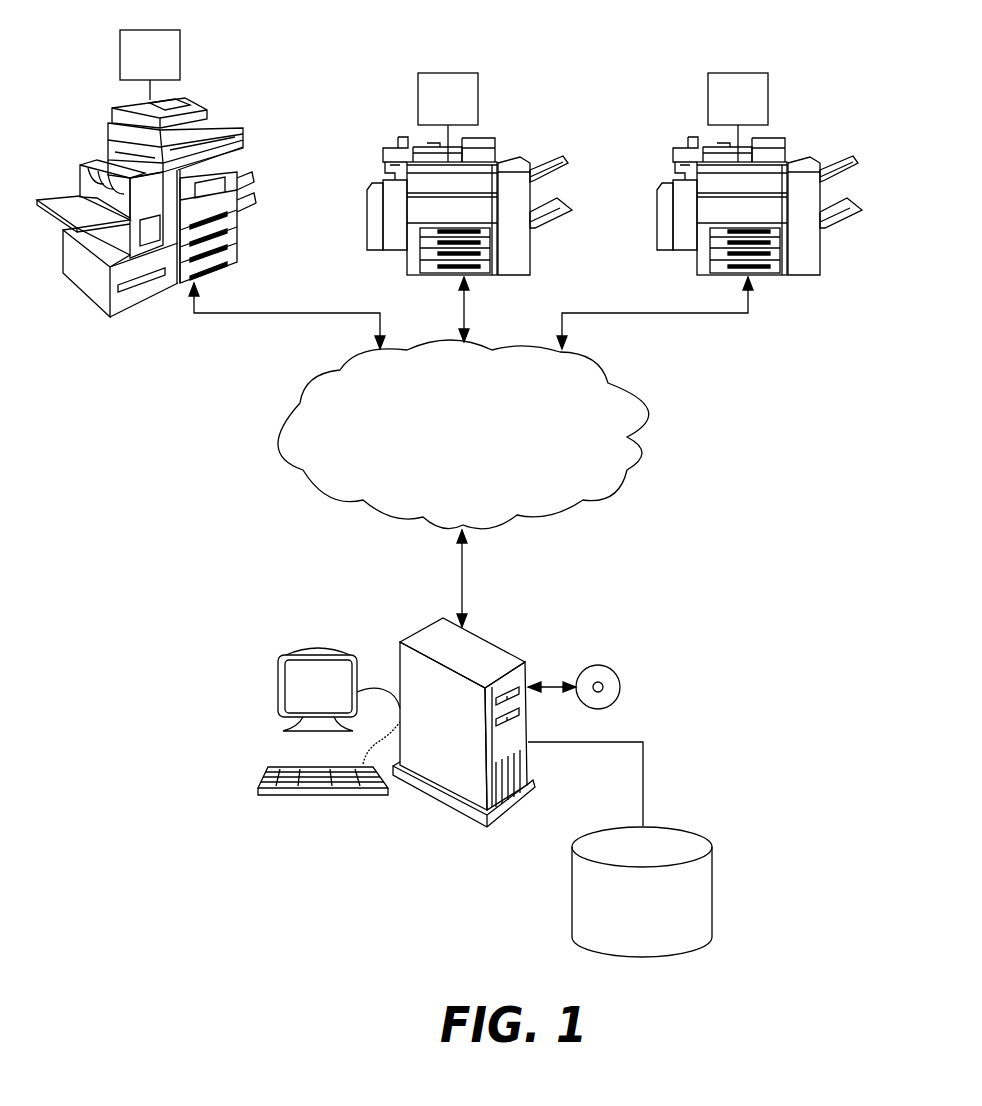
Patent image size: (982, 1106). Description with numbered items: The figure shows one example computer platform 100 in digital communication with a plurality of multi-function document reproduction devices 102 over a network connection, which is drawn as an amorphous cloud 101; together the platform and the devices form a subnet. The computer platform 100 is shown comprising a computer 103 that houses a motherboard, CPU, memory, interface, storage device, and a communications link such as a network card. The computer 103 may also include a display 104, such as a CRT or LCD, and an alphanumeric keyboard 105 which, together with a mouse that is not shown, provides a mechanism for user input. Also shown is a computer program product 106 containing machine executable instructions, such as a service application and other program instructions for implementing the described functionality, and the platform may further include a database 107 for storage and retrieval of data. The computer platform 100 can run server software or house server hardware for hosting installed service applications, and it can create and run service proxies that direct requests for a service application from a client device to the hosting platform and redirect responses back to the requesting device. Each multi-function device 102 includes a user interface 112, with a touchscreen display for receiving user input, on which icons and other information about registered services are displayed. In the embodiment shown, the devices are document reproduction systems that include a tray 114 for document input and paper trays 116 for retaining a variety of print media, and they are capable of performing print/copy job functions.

The computer platform 100 is at (626, 626).
The amorphous cloud 101 is at (622, 387).
The multi-function document reproduction device 102 is at (207, 83).
The computer 103 is at (483, 645).
The display 104 is at (320, 652).
The alphanumeric keyboard 105 is at (288, 790).
The computer program product 106 is at (619, 678).
The database 107 is at (682, 833).
The user interface 112 is at (165, 29).
The tray 114 is at (245, 177).
The paper trays 116 is at (228, 257).